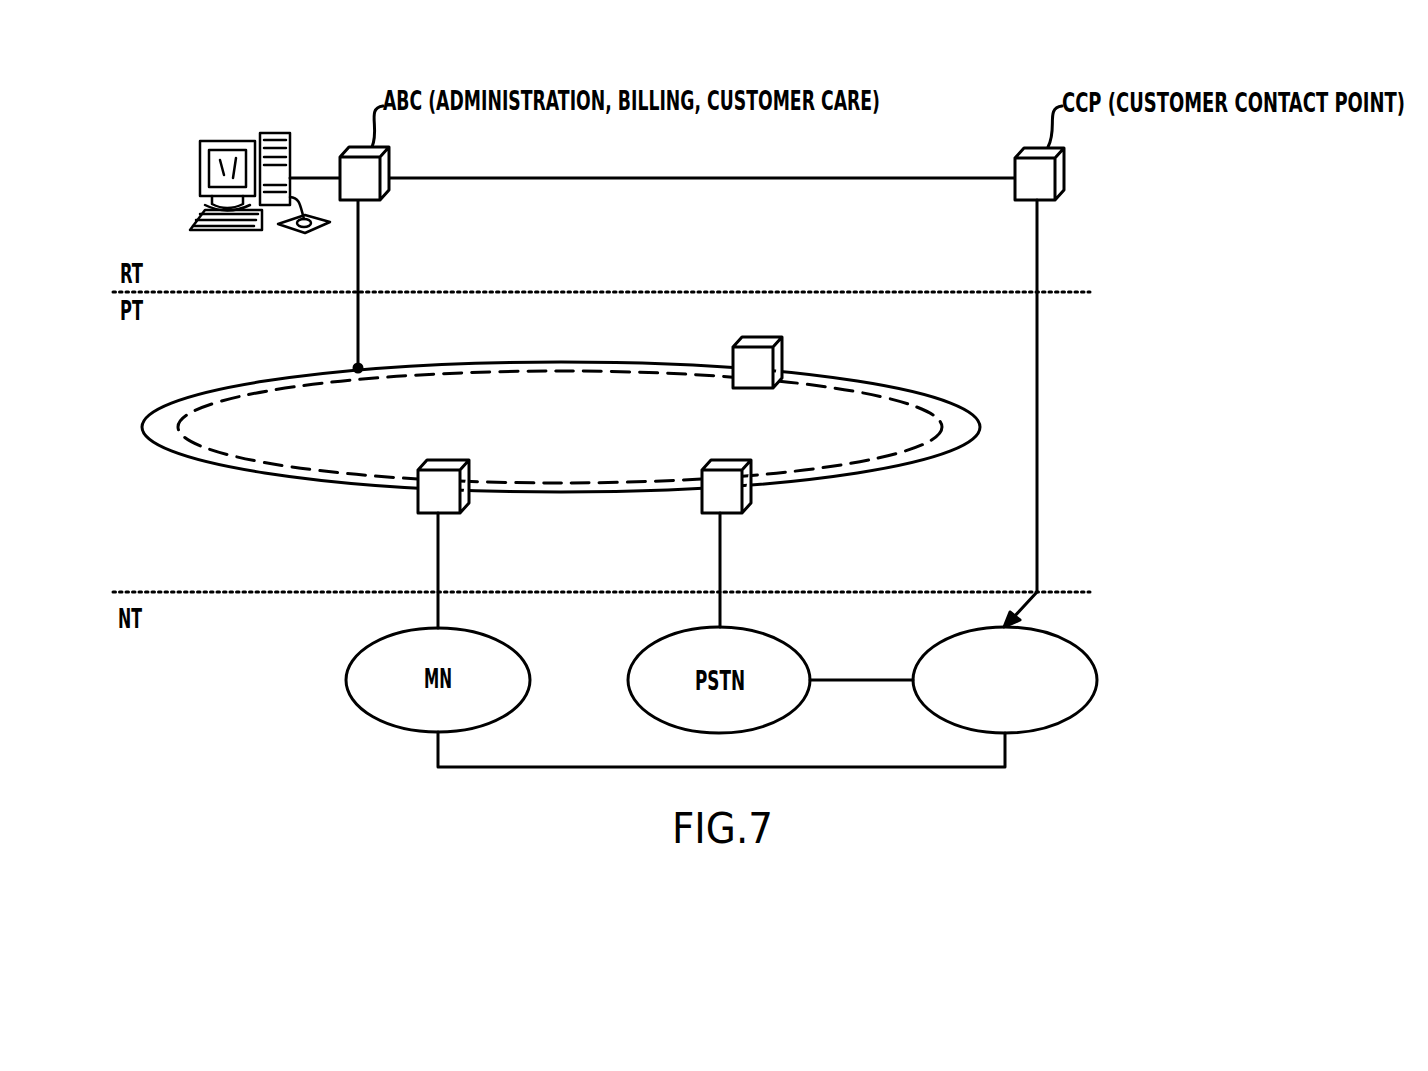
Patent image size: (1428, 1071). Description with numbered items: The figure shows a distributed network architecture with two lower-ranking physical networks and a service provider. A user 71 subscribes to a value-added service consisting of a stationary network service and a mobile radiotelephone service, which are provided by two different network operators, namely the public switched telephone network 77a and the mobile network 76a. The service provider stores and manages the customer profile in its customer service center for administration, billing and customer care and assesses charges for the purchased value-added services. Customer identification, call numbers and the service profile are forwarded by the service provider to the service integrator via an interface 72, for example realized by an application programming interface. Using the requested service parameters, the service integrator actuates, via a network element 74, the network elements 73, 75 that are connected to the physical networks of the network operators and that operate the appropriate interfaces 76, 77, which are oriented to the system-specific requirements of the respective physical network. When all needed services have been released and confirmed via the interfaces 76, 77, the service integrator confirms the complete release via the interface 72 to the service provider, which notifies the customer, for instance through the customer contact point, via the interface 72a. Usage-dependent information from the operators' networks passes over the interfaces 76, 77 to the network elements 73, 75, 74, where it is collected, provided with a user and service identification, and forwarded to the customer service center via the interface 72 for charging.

The user 71 is at (1097, 678).
The interface 72 is at (358, 268).
The interface 72a is at (1036, 245).
The network element 73 is at (446, 461).
The network element 74 is at (782, 348).
The network element 75 is at (730, 461).
The interface 76 is at (438, 557).
The mobile network 76a is at (582, 767).
The interface 77 is at (720, 558).
The public switched telephone network 77a is at (866, 680).